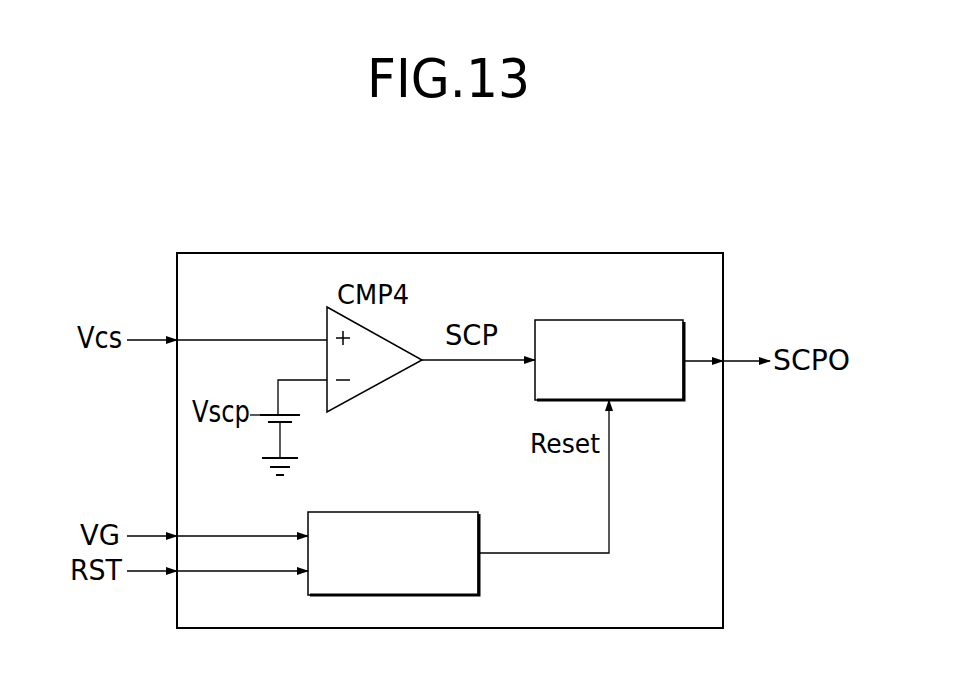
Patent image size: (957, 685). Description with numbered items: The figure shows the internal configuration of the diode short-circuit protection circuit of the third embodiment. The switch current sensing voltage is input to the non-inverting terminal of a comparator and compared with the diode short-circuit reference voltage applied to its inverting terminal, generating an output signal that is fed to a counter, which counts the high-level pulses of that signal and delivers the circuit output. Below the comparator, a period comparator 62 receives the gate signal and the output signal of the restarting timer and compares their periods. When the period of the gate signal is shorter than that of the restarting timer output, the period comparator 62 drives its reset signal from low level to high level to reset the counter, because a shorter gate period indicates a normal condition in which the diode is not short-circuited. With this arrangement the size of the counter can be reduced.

The period comparator 62 is at (395, 512).